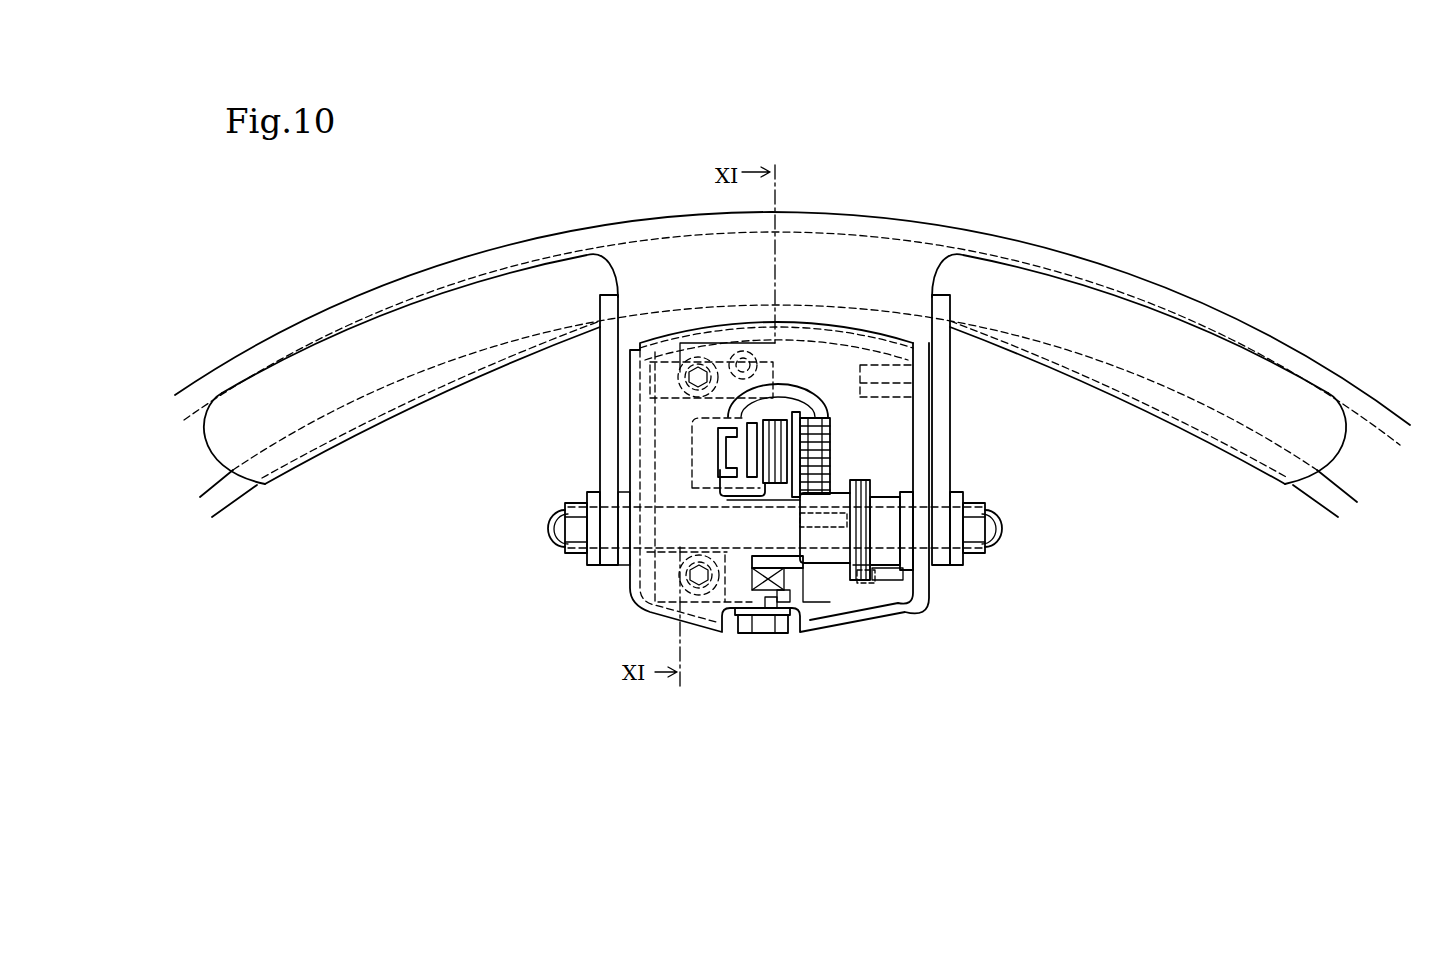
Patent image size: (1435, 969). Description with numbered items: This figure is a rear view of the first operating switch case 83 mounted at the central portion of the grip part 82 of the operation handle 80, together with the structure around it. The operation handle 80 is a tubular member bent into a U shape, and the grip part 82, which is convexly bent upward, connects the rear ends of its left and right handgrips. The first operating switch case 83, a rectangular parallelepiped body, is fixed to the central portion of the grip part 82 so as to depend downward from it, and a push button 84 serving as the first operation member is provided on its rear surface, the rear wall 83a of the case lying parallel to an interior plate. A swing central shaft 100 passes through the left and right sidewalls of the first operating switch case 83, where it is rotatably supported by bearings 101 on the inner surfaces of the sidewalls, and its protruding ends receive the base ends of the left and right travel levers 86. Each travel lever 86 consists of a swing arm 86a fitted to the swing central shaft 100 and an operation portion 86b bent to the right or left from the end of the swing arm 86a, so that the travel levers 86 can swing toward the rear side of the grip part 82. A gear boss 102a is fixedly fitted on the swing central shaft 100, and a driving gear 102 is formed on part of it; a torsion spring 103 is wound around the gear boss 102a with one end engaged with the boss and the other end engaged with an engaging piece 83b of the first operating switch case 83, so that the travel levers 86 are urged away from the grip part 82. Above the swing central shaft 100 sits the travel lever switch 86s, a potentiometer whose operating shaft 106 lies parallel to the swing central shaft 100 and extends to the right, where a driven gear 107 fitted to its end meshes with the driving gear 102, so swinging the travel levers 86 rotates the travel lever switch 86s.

The operation handle 80 is at (792, 341).
The grip part 82 is at (842, 212).
The first operating switch case 83 is at (775, 634).
The rear wall 83a is at (712, 618).
The engaging piece 83b is at (893, 596).
The push button 84 is at (755, 425).
The travel lever 86 is at (458, 411).
The swing arm 86a is at (597, 425).
The operation portion 86b is at (336, 393).
The travel lever switch 86s is at (693, 455).
The swing central shaft 100 is at (793, 560).
The bearing 101 is at (658, 560).
The driving gear 102 is at (820, 492).
The gear boss 102a is at (855, 585).
The torsion spring 103 is at (860, 582).
The operating shaft 106 is at (785, 408).
The driven gear 107 is at (828, 420).